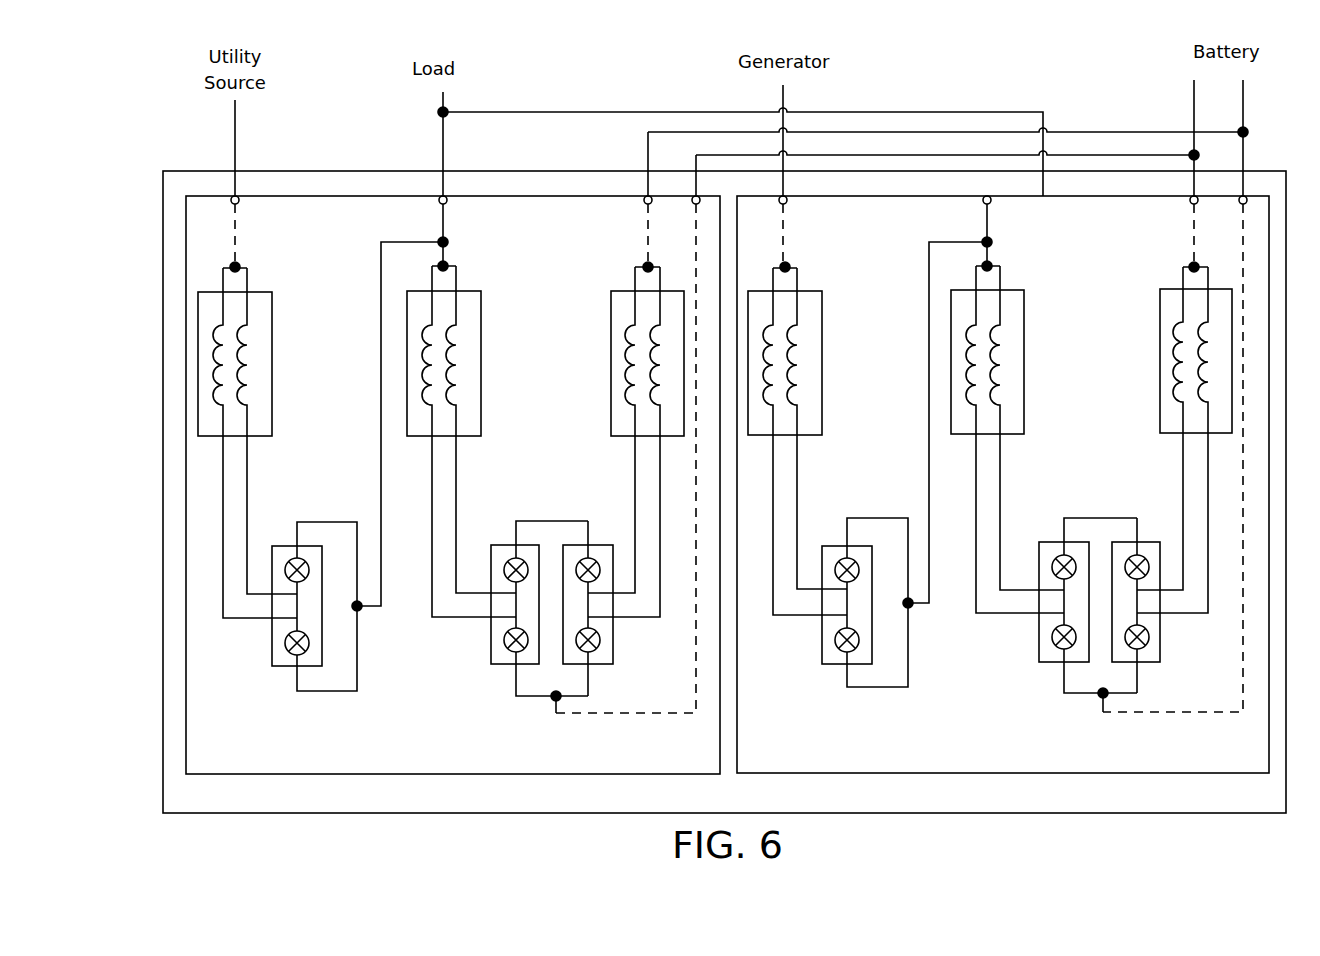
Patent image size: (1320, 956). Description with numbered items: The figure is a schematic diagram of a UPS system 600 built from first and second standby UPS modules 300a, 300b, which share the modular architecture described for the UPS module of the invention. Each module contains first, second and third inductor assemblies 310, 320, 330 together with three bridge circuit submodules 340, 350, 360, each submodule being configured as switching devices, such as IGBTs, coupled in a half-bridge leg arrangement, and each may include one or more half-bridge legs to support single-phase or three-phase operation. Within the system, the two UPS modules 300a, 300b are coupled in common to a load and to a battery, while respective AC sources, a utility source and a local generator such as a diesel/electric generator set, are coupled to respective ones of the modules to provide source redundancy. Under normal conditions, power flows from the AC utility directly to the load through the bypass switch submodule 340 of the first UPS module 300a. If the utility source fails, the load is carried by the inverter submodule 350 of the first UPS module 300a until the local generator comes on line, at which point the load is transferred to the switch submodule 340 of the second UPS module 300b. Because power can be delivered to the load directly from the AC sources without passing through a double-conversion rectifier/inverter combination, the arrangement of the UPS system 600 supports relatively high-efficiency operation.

The first standby UPS module 300a is at (448, 197).
The second standby UPS module 300b is at (956, 194).
The first inductor assembly 310 is at (272, 364).
The second inductor assembly 320 is at (481, 365).
The third inductor assembly 330 is at (611, 365).
The bypass switch submodule 340 is at (277, 668).
The inverter submodule 350 is at (505, 668).
The third bridge circuit submodule 360 is at (600, 668).
The UPS system 600 is at (746, 804).